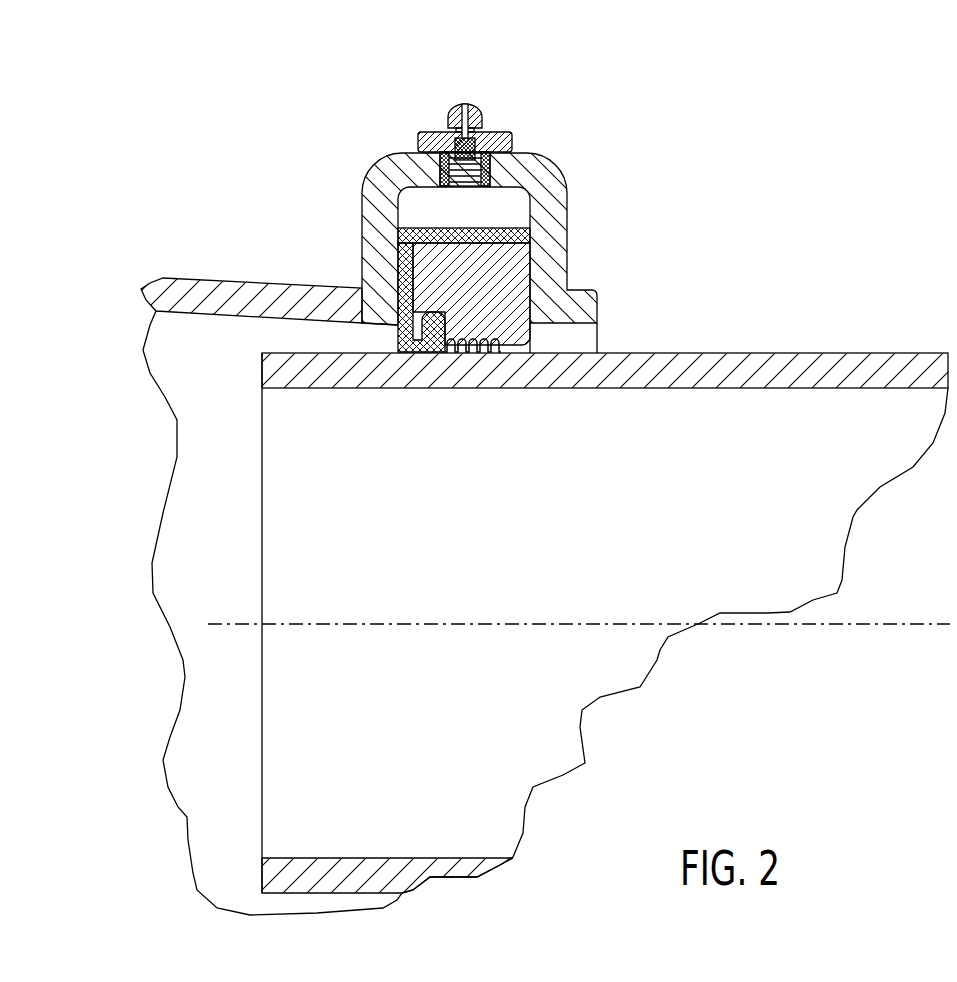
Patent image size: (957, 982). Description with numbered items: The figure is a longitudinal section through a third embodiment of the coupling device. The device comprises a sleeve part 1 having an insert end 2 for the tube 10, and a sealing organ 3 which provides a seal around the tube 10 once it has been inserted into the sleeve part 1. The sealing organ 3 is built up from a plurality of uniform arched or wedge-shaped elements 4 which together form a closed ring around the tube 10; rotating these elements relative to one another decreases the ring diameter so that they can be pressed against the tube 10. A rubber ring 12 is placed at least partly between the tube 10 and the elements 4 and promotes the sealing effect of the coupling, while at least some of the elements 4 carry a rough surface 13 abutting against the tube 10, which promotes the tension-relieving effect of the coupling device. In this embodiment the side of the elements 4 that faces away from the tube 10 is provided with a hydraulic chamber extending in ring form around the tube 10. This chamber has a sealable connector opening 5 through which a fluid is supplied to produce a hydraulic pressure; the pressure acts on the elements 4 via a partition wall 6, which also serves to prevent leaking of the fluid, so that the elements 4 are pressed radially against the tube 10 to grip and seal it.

The sleeve part 1 is at (226, 293).
The insert end 2 is at (582, 338).
The sealing organ 3 is at (385, 112).
The arched or wedge-shaped elements 4 is at (500, 279).
The sealable connector opening 5 is at (463, 108).
The partition wall 6 is at (498, 233).
The tube 10 is at (832, 362).
The rubber ring 12 is at (398, 337).
The rough surface 13 is at (468, 356).